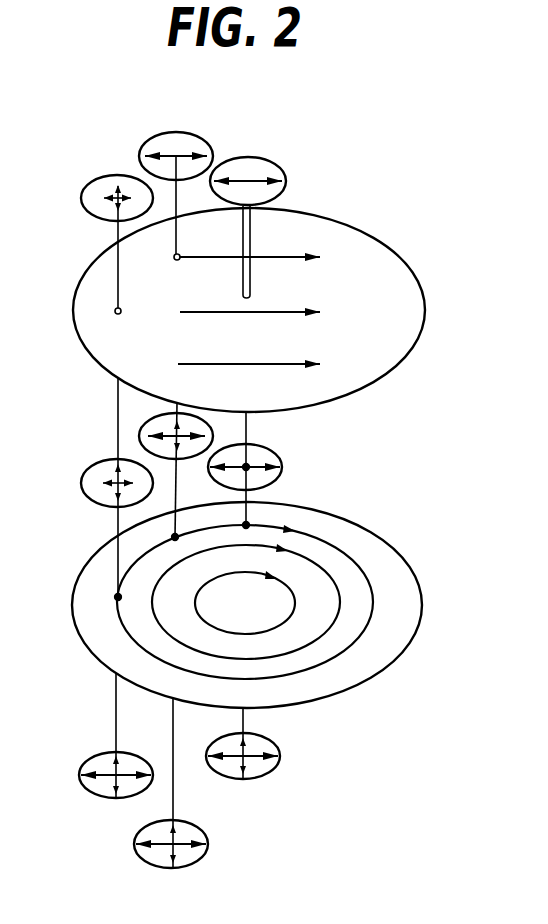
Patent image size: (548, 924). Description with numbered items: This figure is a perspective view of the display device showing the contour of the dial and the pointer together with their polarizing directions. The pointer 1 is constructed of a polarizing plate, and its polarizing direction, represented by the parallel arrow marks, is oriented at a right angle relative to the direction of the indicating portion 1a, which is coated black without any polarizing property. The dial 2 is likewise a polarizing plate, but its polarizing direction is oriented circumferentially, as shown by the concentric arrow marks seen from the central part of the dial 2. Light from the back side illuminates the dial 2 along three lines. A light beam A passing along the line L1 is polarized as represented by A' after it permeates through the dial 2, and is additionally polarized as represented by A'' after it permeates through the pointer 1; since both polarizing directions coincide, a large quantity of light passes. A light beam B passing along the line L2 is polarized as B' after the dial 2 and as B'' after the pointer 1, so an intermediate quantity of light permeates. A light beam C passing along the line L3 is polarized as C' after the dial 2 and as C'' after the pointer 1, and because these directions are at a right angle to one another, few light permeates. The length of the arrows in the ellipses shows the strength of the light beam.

The pointer 1 is at (404, 260).
The indicating portion 1a is at (253, 216).
The dial 2 is at (410, 567).
The light beam A is at (270, 759).
The light beam B is at (202, 845).
The light beam C is at (95, 764).
The polarized light beam A' is at (279, 468).
The polarized light beam B' is at (146, 462).
The polarized light beam C' is at (89, 487).
The polarized light beam A'' is at (270, 154).
The polarized light beam B'' is at (176, 168).
The polarized light beam C'' is at (111, 215).
The line L1 is at (246, 719).
The line L2 is at (175, 748).
The line L3 is at (115, 693).